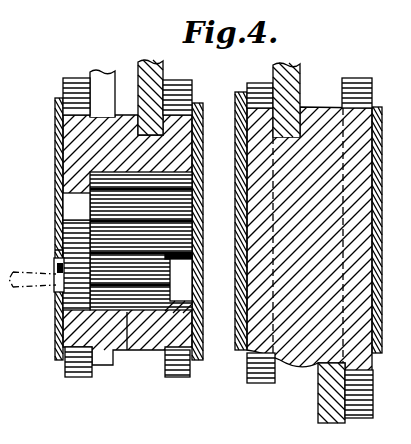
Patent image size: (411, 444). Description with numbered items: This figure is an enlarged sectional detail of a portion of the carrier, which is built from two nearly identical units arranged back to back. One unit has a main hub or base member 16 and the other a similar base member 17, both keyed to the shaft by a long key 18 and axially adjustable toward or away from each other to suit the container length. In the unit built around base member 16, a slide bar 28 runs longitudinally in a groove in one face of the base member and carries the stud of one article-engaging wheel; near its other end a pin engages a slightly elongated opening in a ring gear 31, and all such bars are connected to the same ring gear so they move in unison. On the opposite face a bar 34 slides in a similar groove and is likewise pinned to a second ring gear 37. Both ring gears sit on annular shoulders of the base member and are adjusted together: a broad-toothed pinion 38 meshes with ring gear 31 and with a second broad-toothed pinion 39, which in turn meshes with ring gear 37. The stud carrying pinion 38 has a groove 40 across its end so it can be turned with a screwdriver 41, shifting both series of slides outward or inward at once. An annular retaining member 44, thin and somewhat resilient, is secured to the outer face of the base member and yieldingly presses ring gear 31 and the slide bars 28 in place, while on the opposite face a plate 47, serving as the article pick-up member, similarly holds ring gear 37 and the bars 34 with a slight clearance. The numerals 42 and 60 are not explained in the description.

The base member 16 is at (102, 152).
The base member 17 is at (318, 196).
The key 18 is at (407, 214).
The slide bar 28 is at (100, 80).
The ring gear 31 is at (80, 368).
The bar 34 is at (152, 80).
The ring gear 37 is at (182, 372).
The broad-toothed pinion 38 is at (127, 312).
The broad-toothed pinion 39 is at (172, 193).
The groove 40 is at (58, 290).
The screwdriver 41 is at (40, 273).
The bearing 42 is at (401, 393).
The annular retaining member 44 is at (56, 191).
The plate 47 is at (242, 229).
The shaft 60 is at (404, 292).